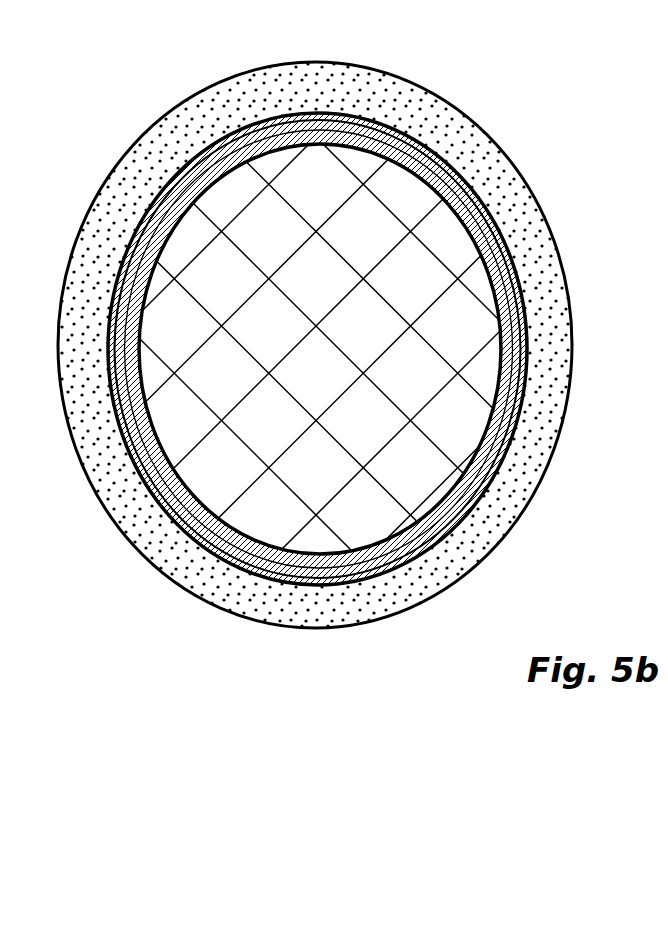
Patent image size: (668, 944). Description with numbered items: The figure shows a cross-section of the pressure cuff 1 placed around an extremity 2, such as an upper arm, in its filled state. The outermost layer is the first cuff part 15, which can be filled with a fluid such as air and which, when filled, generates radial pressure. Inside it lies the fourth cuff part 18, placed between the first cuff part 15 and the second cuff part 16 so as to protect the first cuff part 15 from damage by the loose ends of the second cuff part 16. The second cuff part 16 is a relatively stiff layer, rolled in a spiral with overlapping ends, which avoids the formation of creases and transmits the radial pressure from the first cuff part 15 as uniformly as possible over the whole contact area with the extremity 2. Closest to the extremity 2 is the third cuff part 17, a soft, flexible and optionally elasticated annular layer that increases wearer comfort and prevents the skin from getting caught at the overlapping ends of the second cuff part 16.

The pressure cuff 1 is at (130, 121).
The extremity 2 is at (402, 178).
The first cuff part 15 is at (479, 159).
The second cuff part 16 is at (273, 128).
The third cuff part 17 is at (320, 115).
The fourth cuff part 18 is at (247, 126).